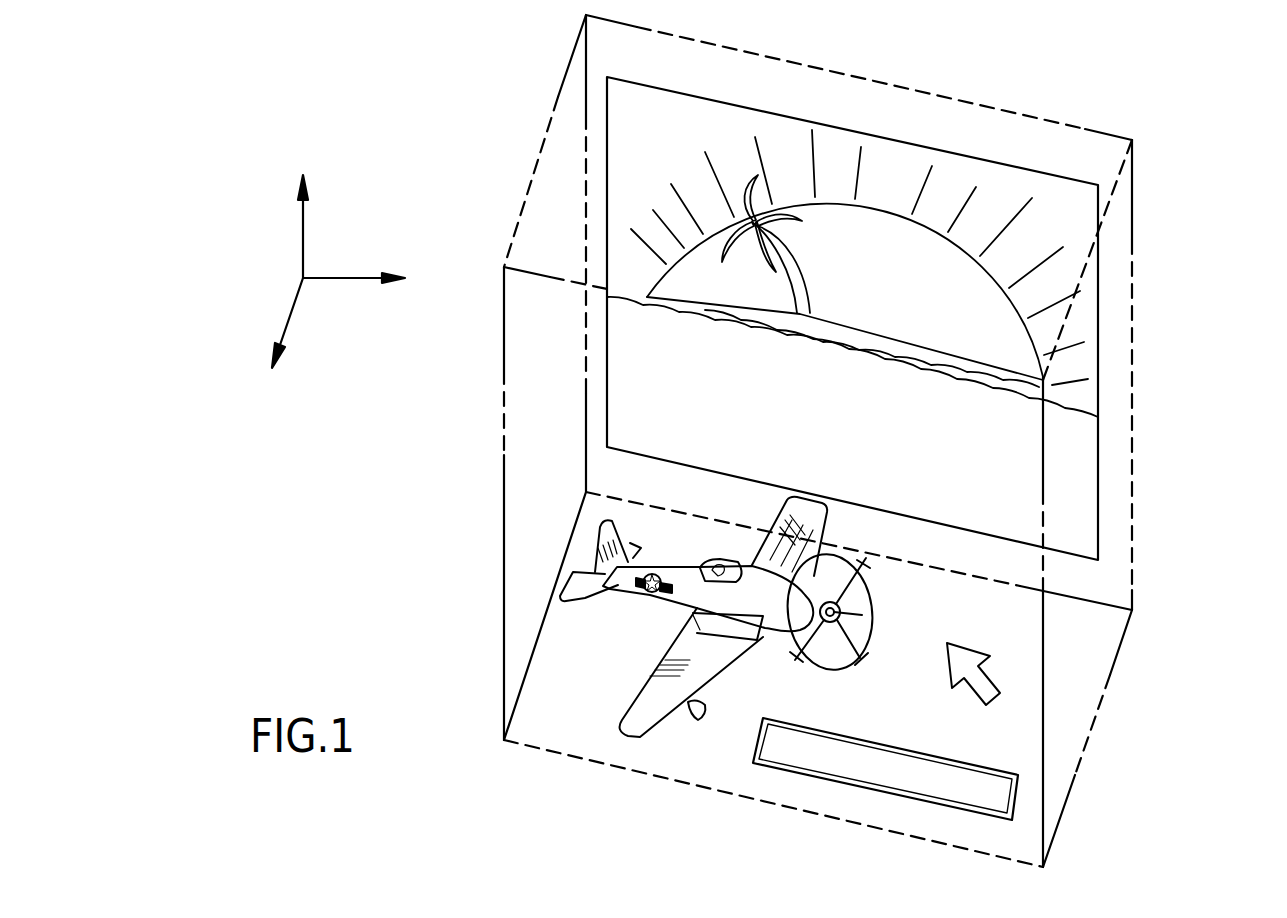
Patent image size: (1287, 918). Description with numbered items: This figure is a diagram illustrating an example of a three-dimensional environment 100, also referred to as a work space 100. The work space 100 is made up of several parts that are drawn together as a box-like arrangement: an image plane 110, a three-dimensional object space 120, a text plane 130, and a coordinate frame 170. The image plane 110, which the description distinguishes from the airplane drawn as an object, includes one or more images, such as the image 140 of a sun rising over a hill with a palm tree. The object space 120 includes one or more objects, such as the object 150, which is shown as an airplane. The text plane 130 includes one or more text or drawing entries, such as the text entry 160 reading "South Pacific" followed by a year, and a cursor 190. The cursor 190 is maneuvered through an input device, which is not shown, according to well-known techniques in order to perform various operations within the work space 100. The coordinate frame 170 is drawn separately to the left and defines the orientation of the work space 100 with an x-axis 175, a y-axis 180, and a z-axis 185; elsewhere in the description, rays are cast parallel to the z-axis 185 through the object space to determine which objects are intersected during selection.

The three-dimensional environment 100 is at (1286, 564).
The image plane 110 is at (970, 140).
The three-dimensional object space 120 is at (552, 390).
The text plane 130 is at (592, 730).
The image 140 is at (606, 201).
The object 150 is at (852, 618).
The text or drawing entry 160 is at (897, 748).
The coordinate frame 170 is at (276, 257).
The x-axis 175 is at (357, 277).
The y-axis 180 is at (302, 215).
The z-axis 185 is at (285, 330).
The cursor 190 is at (1000, 690).